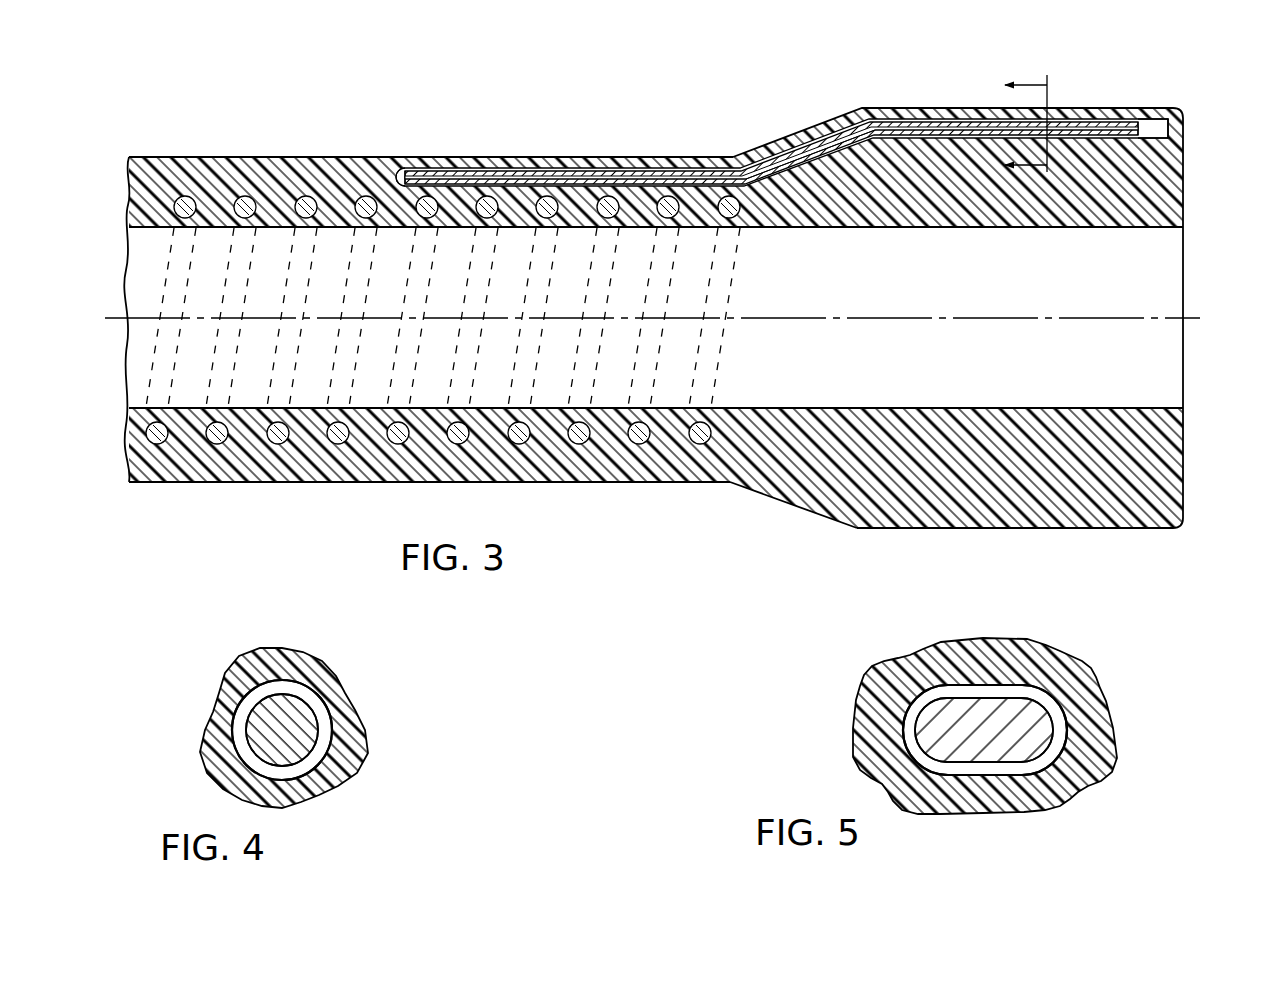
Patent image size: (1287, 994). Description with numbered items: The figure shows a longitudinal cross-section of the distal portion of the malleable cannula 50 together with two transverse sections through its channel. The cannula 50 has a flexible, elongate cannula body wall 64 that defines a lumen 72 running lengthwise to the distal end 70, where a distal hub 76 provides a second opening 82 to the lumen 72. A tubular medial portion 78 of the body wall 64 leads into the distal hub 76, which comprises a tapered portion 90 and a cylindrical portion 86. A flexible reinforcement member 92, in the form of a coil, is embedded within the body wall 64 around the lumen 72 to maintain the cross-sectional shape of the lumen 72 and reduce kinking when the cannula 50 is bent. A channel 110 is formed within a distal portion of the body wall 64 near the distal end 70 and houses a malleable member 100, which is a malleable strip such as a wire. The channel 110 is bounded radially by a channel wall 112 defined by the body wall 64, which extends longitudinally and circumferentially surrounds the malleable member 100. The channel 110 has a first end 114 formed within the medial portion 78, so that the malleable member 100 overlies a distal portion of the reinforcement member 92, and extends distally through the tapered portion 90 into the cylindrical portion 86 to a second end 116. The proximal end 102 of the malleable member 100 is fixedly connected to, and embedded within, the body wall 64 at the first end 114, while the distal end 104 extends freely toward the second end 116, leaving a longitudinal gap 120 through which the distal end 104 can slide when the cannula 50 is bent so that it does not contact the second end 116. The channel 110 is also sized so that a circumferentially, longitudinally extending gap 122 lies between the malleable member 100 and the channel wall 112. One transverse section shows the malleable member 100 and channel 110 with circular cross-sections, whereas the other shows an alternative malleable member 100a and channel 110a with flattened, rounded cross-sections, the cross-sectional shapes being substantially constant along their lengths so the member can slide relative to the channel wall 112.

In FIG. 3, the cannula 50 is at (565, 112).
In FIG. 3, the cannula body wall 64 is at (160, 155).
In FIG. 4, the cannula body wall 64 is at (355, 760).
In FIG. 5, the cannula body wall 64 is at (1105, 790).
In FIG. 3, the distal end 70 is at (1172, 530).
In FIG. 3, the lumen 72 is at (652, 317).
In FIG. 3, the distal hub 76 is at (898, 106).
In FIG. 3, the tubular medial portion 78 is at (237, 157).
In FIG. 3, the second opening 82 is at (1185, 290).
In FIG. 3, the cylindrical portion 86 is at (987, 530).
In FIG. 3, the tapered portion 90 is at (785, 505).
In FIG. 3, the flexible reinforcement member 92 is at (305, 196).
In FIG. 3, the malleable member 100 is at (826, 130).
In FIG. 4, the malleable member 100 is at (283, 688).
In FIG. 5, the malleable member 100a is at (935, 700).
In FIG. 3, the proximal end of the malleable member 102 is at (402, 170).
In FIG. 3, the distal end of the malleable member 104 is at (1133, 128).
In FIG. 3, the channel 110 is at (786, 165).
In FIG. 4, the channel 110 is at (285, 775).
In FIG. 5, the channel 110a is at (940, 772).
In FIG. 3, the channel wall 112 is at (705, 186).
In FIG. 4, the channel wall 112 is at (326, 704).
In FIG. 5, the channel wall 112 is at (1045, 702).
In FIG. 3, the first end of the channel 114 is at (438, 168).
In FIG. 3, the second end of the channel 116 is at (1152, 140).
In FIG. 3, the longitudinal gap 120 is at (1162, 127).
In FIG. 3, the circumferentially, longitudinally extending gap 122 is at (1084, 118).
In FIG. 4, the circumferentially, longitudinally extending gap 122 is at (240, 716).
In FIG. 5, the circumferentially, longitudinally extending gap 122 is at (910, 715).